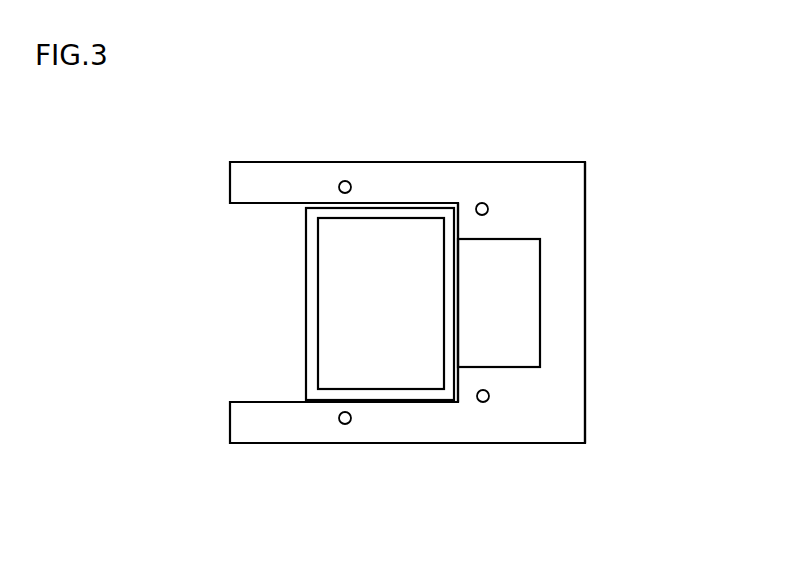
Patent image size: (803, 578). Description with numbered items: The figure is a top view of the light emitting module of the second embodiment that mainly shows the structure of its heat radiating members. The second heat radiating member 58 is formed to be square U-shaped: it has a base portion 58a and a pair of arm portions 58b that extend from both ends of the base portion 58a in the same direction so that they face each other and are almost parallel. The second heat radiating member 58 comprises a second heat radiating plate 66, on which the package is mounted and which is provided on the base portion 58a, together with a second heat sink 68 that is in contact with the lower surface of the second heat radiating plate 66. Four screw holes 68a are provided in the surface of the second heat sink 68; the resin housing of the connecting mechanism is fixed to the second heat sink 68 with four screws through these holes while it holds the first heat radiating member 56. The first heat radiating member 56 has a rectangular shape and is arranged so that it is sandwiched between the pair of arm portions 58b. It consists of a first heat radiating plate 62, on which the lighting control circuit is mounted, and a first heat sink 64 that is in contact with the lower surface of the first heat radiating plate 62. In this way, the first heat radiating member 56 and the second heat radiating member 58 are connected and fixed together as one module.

The first heat radiating member 56 is at (334, 304).
The second heat radiating member 58 is at (595, 199).
The base portion 58a is at (555, 413).
The arm portions 58b is at (257, 190).
The first heat radiating plate 62 is at (318, 370).
The first heat sink 64 is at (306, 338).
The second heat radiating plate 66 is at (540, 301).
The second heat sink 68 is at (585, 368).
The screw holes 68a is at (345, 181).